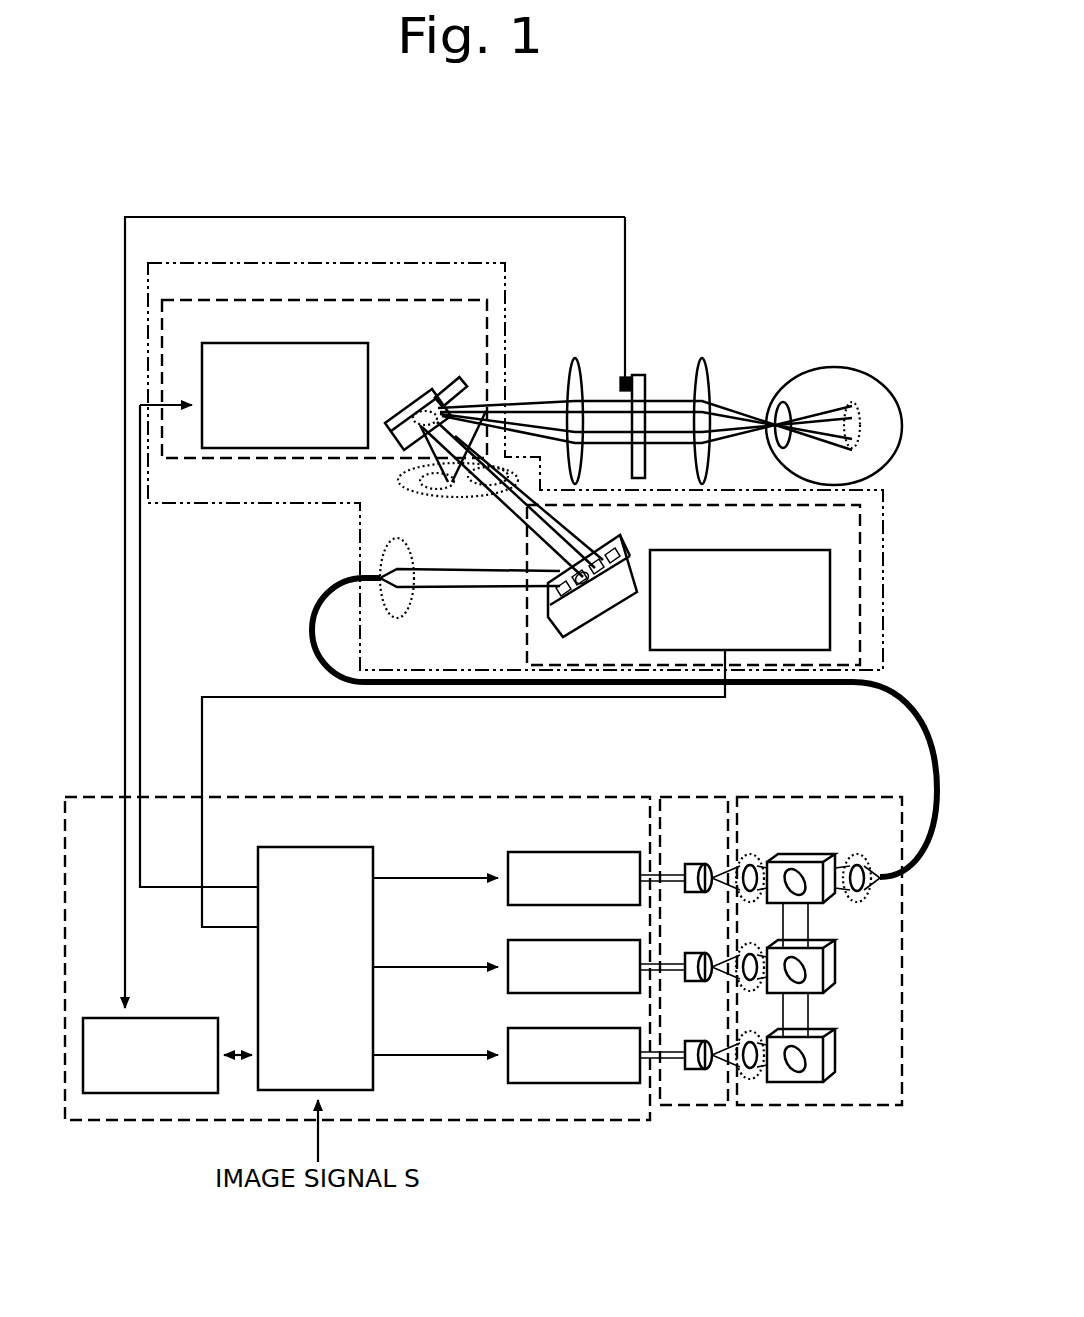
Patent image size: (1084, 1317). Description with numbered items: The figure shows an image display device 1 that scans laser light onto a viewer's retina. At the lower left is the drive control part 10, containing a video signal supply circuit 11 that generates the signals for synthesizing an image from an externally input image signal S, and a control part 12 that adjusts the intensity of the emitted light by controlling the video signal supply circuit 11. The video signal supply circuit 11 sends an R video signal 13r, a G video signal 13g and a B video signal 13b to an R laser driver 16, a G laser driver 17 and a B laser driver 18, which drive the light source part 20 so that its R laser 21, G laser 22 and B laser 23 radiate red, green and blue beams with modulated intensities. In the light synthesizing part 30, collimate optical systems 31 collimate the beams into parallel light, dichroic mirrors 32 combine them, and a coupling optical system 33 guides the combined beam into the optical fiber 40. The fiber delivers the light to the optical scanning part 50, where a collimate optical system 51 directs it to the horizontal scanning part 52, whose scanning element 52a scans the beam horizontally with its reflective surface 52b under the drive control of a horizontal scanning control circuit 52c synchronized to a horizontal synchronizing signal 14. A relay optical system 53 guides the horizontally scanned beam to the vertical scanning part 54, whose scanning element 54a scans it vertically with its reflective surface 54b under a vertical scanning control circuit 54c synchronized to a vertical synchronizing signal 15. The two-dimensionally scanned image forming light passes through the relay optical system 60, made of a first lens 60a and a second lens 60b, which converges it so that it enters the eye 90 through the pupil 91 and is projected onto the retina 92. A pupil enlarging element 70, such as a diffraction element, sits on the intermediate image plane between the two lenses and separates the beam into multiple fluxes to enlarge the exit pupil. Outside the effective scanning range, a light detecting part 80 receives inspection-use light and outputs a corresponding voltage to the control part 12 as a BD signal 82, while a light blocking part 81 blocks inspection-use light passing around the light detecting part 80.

The image display device 1 is at (703, 263).
The drive control part 10 is at (423, 1122).
The video signal supply circuit 11 is at (327, 845).
The control part 12 is at (203, 1017).
The R video signal 13r is at (435, 842).
The G video signal 13g is at (435, 930).
The B video signal 13b is at (435, 1018).
The horizontal synchronizing signal 14 is at (300, 698).
The vertical synchronizing signal 15 is at (142, 610).
The R laser driver 16 is at (605, 850).
The G laser driver 17 is at (605, 938).
The B laser driver 18 is at (605, 1026).
The light source part 20 is at (700, 1108).
The R laser 21 is at (690, 864).
The G laser 22 is at (690, 953).
The B laser 23 is at (690, 1041).
The light synthesizing part 30 is at (815, 1108).
The collimate optical systems 31 is at (756, 846).
The dichroic mirrors 32 is at (851, 988).
The coupling optical system 33 is at (865, 846).
The optical fiber 40 is at (899, 695).
The optical scanning part 50 is at (883, 588).
The collimate optical system 51 is at (426, 610).
The horizontal scanning part 52 is at (868, 513).
The scanning element 52a is at (637, 543).
The reflective surface 52b is at (568, 562).
The horizontal scanning control circuit 52c is at (735, 549).
The relay optical system 53 is at (390, 480).
The vertical scanning part 54 is at (340, 300).
The scanning element 54a is at (413, 393).
The reflective surface 54b is at (441, 386).
The vertical scanning control circuit 54c is at (300, 343).
The relay optical system 60 is at (651, 384).
The first lens 60a is at (568, 368).
The second lens 60b is at (712, 383).
The pupil enlarging element 70 is at (648, 380).
The light detecting part 80 is at (622, 380).
The light blocking part 81 is at (632, 369).
The BD signal 82 is at (495, 217).
The eye 90 is at (838, 346).
The pupil 91 is at (779, 452).
The retina 92 is at (863, 422).